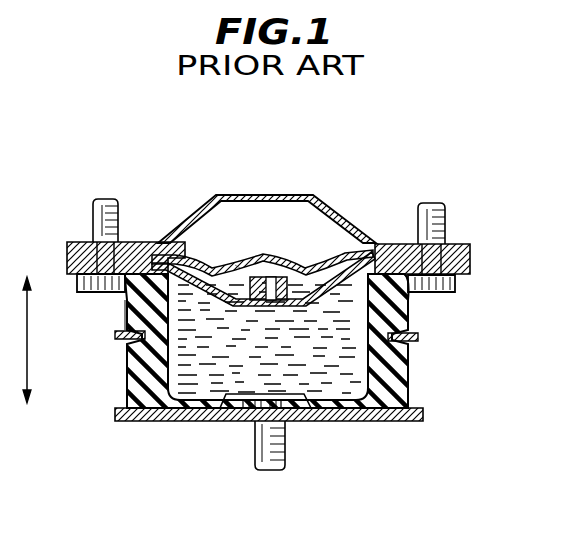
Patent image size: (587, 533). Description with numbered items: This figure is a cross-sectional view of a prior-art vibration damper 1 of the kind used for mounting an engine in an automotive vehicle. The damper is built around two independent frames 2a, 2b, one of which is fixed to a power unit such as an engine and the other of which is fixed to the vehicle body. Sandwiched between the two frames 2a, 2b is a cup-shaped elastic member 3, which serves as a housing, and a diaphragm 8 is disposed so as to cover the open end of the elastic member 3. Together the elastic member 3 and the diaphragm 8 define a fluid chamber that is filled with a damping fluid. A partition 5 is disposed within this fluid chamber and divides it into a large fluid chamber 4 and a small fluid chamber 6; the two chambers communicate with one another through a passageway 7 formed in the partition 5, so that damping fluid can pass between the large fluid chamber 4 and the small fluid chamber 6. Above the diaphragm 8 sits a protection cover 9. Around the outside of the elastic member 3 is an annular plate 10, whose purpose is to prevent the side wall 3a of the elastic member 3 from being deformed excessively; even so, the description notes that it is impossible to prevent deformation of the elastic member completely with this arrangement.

The vibration damper 1 is at (408, 190).
The frame 2a is at (472, 253).
The frame 2b is at (400, 416).
The elastic member 3 is at (407, 365).
The side wall 3a is at (133, 320).
The large fluid chamber 4 is at (185, 370).
The partition 5 is at (332, 280).
The small fluid chamber 6 is at (222, 276).
The passageway 7 is at (274, 276).
The diaphragm 8 is at (229, 282).
The protection cover 9 is at (282, 195).
The annular plate 10 is at (417, 338).